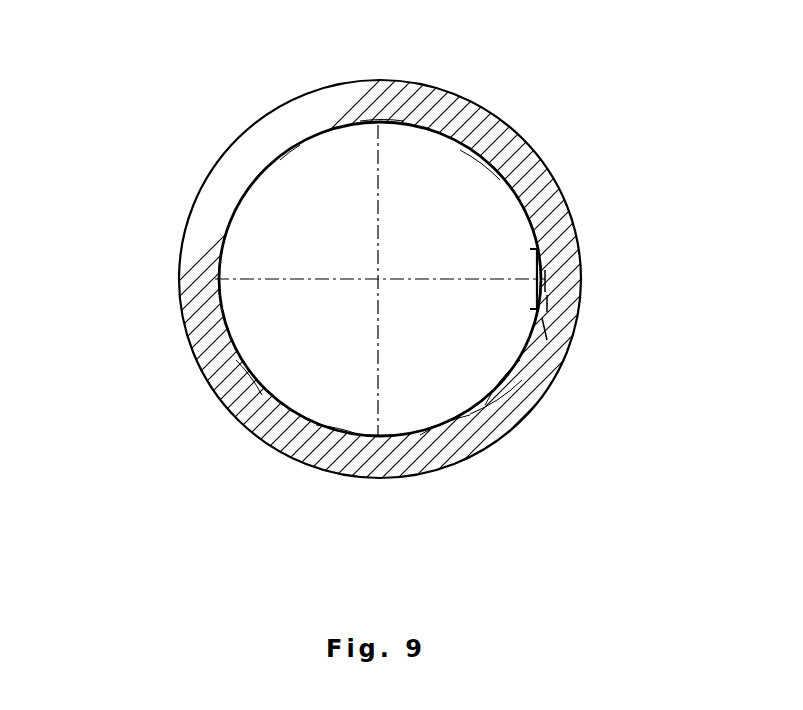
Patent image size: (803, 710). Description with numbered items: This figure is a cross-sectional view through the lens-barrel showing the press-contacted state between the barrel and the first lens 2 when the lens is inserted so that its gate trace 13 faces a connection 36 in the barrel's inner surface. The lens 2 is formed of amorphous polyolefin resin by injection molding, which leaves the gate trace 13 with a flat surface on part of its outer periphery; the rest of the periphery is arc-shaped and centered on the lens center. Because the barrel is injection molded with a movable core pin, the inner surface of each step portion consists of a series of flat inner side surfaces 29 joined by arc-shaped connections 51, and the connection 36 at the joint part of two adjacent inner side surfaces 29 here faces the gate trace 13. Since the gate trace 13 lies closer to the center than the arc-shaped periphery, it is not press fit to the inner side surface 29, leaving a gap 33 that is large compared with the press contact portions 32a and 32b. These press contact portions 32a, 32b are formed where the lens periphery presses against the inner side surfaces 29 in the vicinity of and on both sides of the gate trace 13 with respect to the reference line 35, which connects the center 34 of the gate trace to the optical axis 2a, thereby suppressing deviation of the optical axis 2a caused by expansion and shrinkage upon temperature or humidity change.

The lens 2 is at (523, 130).
The optical axis 2a is at (380, 279).
The gate trace 13 is at (545, 295).
The inner side surface 29 is at (349, 126).
The press contact portion 32a is at (510, 400).
The press contact portion 32b is at (460, 190).
The gap 33 is at (540, 315).
The center of the gate trace 34 is at (535, 281).
The reference line 35 is at (465, 281).
The connection 36 is at (543, 279).
The arc-shaped connection 51 is at (388, 123).